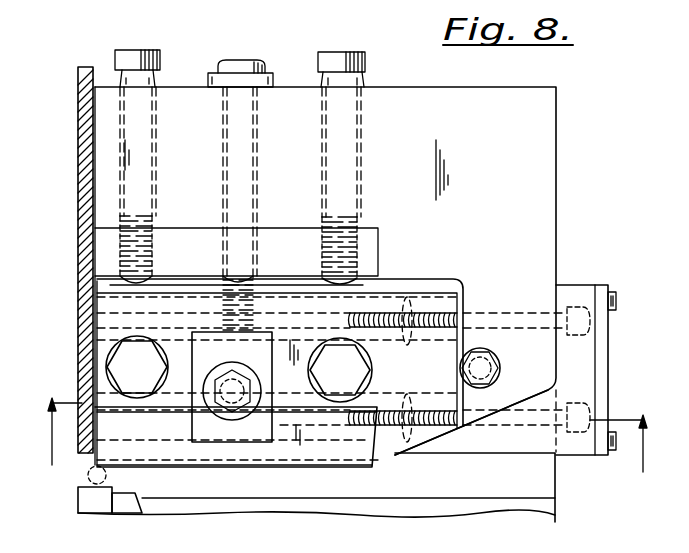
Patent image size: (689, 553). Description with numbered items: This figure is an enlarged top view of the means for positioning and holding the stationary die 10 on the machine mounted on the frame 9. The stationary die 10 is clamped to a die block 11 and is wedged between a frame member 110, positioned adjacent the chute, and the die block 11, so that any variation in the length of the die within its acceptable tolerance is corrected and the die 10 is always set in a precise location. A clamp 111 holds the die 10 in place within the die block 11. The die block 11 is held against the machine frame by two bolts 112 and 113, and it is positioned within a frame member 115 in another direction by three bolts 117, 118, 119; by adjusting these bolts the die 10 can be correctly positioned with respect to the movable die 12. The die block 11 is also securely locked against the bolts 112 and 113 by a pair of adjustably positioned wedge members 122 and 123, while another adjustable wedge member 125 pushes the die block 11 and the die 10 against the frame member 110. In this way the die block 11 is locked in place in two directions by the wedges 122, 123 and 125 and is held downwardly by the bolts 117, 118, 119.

The frame 9 is at (348, 447).
The stationary die 10 is at (163, 443).
The die block 11 is at (470, 369).
The movable die 12 is at (88, 501).
The frame member 110 is at (86, 427).
The clamp 111 is at (242, 427).
The bolt 112 is at (144, 340).
The bolt 113 is at (328, 345).
The frame member 115 is at (537, 195).
The bolt 117 is at (240, 65).
The bolt 118 is at (128, 57).
The bolt 119 is at (335, 62).
The wedge member 122 is at (383, 448).
The wedge member 123 is at (390, 297).
The adjustable wedge member 125 is at (502, 372).